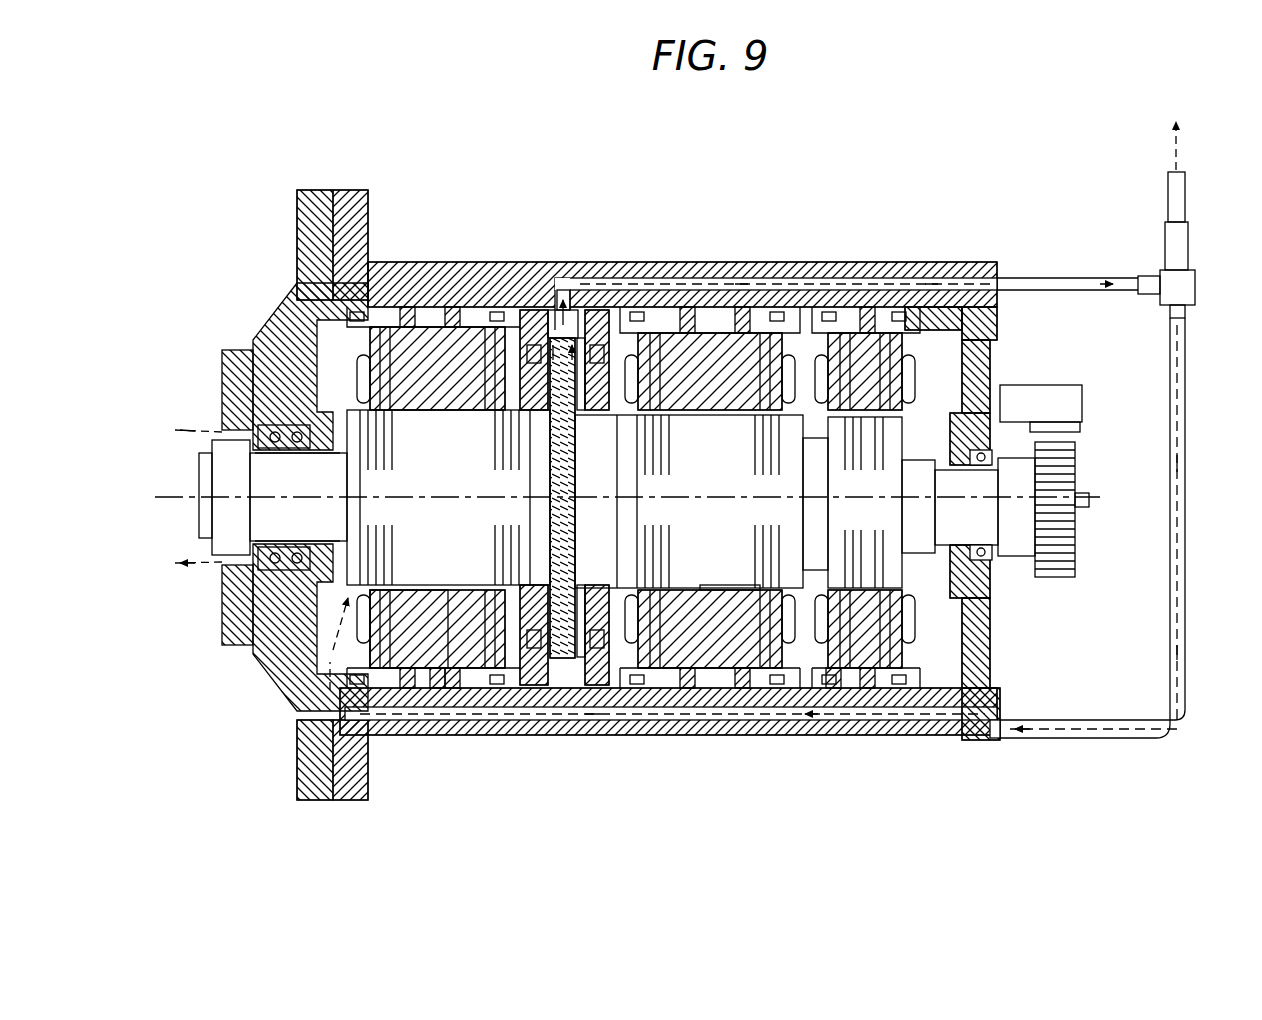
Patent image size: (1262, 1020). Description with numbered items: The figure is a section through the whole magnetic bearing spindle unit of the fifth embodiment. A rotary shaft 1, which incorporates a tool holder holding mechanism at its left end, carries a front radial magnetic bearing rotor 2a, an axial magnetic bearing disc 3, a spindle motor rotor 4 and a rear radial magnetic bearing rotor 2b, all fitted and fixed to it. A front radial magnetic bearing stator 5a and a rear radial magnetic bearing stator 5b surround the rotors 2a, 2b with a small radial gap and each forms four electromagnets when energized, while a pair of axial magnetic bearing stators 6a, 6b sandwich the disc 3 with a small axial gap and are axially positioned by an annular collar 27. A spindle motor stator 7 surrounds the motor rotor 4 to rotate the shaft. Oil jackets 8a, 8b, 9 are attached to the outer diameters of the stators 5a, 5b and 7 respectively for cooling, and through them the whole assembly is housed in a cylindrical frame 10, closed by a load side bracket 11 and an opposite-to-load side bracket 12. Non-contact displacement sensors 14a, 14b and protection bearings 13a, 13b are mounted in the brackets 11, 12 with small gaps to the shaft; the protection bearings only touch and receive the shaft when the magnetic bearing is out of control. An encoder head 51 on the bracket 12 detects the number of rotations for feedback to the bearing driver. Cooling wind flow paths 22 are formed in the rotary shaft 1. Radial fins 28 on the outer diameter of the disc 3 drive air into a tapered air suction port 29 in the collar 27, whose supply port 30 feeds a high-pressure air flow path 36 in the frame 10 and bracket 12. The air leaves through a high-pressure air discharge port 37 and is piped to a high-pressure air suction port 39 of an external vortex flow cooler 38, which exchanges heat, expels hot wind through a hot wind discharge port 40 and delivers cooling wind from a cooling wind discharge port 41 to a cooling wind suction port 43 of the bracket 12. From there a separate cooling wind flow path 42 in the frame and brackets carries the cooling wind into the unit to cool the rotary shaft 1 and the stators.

The rotary shaft 1 is at (200, 467).
The front radial magnetic bearing rotor 2a is at (318, 355).
The rear radial magnetic bearing rotor 2b is at (907, 305).
The axial magnetic bearing disc 3 is at (528, 385).
The spindle motor rotor 4 is at (717, 433).
The front radial magnetic bearing stator 5a is at (420, 329).
The rear radial magnetic bearing stator 5b is at (858, 340).
The load side axial magnetic bearing stator 6a is at (523, 390).
The opposite-to-load side axial magnetic bearing stator 6b is at (612, 360).
The spindle motor stator 7 is at (760, 395).
The oil jacket for cooling the front radial magnetic bearing stator 8a is at (445, 686).
The oil jacket for cooling the rear radial magnetic bearing stator 8b is at (830, 690).
The oil jacket for cooling the spindle motor stator 9 is at (680, 690).
The cylindrical frame 10 is at (350, 192).
The load side bracket 11 is at (300, 228).
The opposite-to-load side bracket 12 is at (966, 275).
The protection bearing 13a is at (265, 568).
The protection bearing 13b is at (995, 582).
The non-contact displacement sensor 14a is at (252, 417).
The non-contact displacement sensor 14b is at (968, 408).
The cooling wind flow path 22 is at (730, 560).
The annular collar 27 is at (560, 296).
The radial fins 28 is at (570, 660).
The air suction port 29 is at (552, 338).
The supply port 30 is at (586, 335).
The high-pressure air flow path 36 is at (695, 279).
The high-pressure air discharge port 37 is at (997, 282).
The vortex flow cooler 38 is at (1195, 287).
The high-pressure air suction port 39 is at (1140, 276).
The hot wind discharge port 40 is at (1182, 185).
The cooling wind discharge port 41 is at (1188, 318).
The cooling wind flow path 42 is at (528, 715).
The cooling wind suction port 43 is at (993, 724).
The encoder head 51 is at (1083, 404).